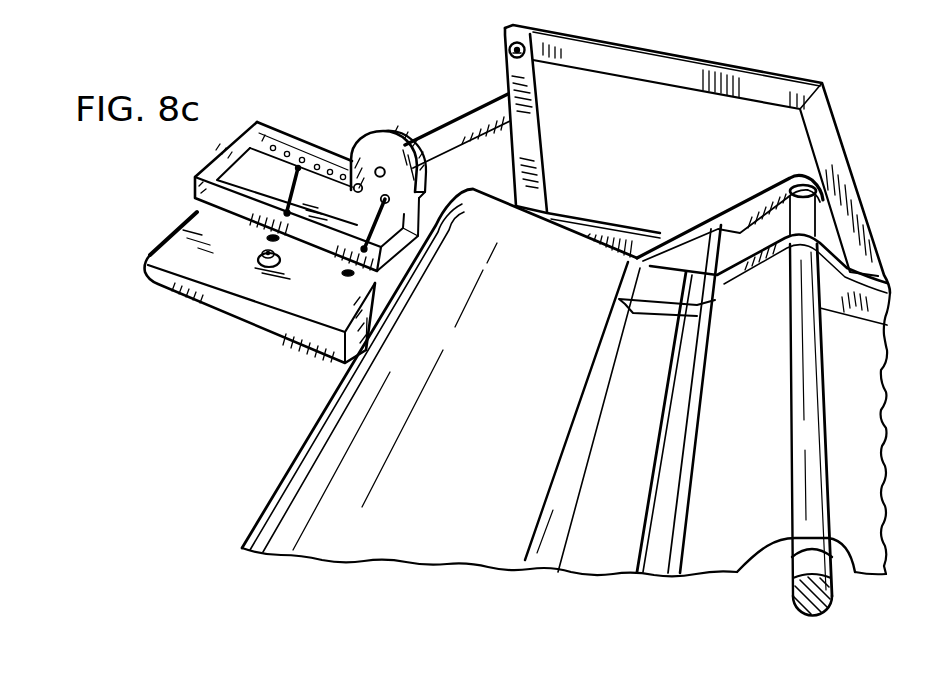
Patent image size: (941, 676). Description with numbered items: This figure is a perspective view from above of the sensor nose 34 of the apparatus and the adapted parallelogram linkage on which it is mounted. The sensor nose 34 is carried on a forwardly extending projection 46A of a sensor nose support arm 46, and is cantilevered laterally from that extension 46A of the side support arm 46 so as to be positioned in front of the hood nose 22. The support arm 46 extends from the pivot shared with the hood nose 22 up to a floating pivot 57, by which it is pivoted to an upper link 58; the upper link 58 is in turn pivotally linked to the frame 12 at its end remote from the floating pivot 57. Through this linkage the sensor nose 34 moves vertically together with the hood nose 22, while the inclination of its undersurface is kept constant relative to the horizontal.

The frame 12 is at (650, 233).
The hood nose 22 is at (333, 418).
The sensor nose 34 is at (181, 232).
The sensor nose support arm 46 is at (530, 118).
The forwardly extending projection 46A is at (437, 133).
The floating pivot 57 is at (508, 54).
The upper link 58 is at (728, 74).